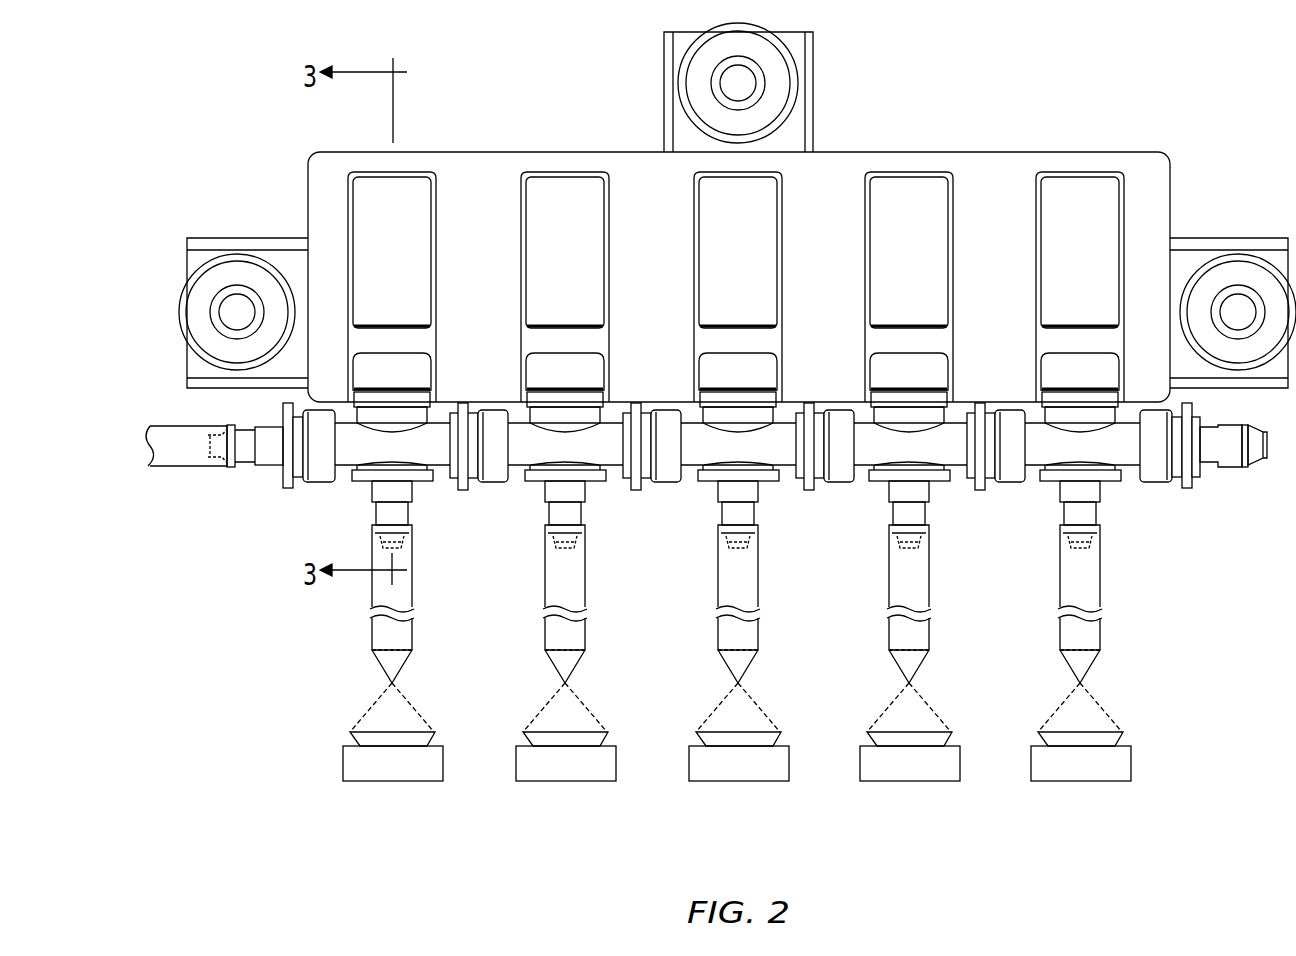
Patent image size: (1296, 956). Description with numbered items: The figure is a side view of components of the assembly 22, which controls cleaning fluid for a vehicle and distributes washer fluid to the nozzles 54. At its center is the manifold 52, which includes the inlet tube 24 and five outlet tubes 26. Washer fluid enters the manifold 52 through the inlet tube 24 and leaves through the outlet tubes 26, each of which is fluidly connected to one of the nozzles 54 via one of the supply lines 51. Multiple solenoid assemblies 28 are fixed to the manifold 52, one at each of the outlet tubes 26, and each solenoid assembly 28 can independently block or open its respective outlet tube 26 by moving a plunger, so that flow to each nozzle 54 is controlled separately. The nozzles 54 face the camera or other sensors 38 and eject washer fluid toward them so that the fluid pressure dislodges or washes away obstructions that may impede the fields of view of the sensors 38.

The assembly 22 is at (1140, 72).
The inlet tube 24 is at (245, 463).
The outlet tube 26 is at (413, 512).
The solenoid assembly 28 is at (551, 192).
The sensor 38 is at (418, 782).
The supply line 51 is at (165, 467).
The manifold 52 is at (1130, 470).
The nozzle 54 is at (407, 662).